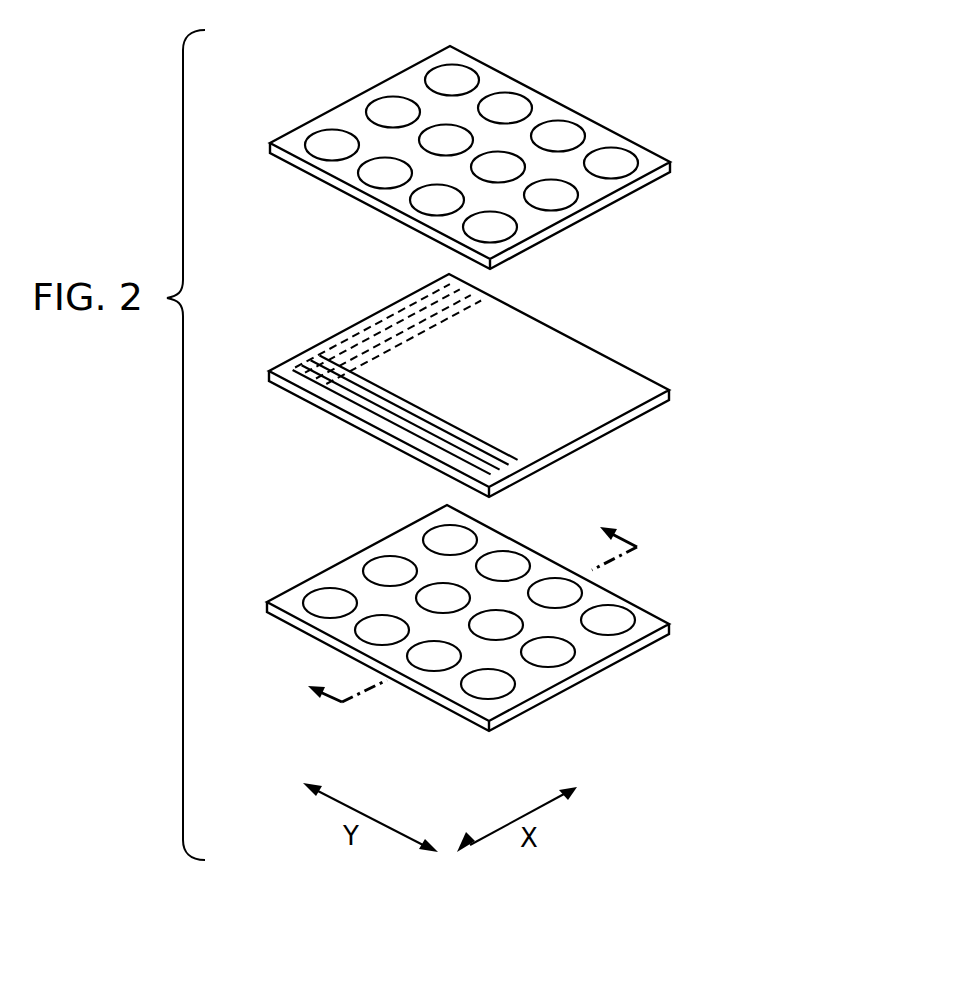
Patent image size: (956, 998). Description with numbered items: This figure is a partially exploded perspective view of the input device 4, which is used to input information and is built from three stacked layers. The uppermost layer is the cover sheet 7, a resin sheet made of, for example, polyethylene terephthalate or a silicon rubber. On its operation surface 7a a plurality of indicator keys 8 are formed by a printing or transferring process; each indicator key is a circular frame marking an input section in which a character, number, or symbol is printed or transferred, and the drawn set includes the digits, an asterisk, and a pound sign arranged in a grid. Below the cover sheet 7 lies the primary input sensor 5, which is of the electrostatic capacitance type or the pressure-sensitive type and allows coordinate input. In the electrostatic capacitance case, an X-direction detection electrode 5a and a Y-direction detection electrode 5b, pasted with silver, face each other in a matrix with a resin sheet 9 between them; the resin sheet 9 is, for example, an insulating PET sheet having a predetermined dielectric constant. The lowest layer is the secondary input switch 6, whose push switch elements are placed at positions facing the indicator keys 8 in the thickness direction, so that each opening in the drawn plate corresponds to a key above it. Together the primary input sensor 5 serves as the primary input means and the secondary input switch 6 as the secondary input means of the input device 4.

The input device 4 is at (714, 167).
The cover sheet 7 is at (652, 160).
The operation surface 7a is at (540, 102).
The indicator keys 8 is at (472, 72).
The primary input sensor 5 is at (651, 334).
The X-direction detection electrode 5a is at (348, 416).
The Y-direction detection electrode 5b is at (358, 328).
The resin sheet 9 is at (573, 427).
The secondary input switch 6 is at (658, 576).